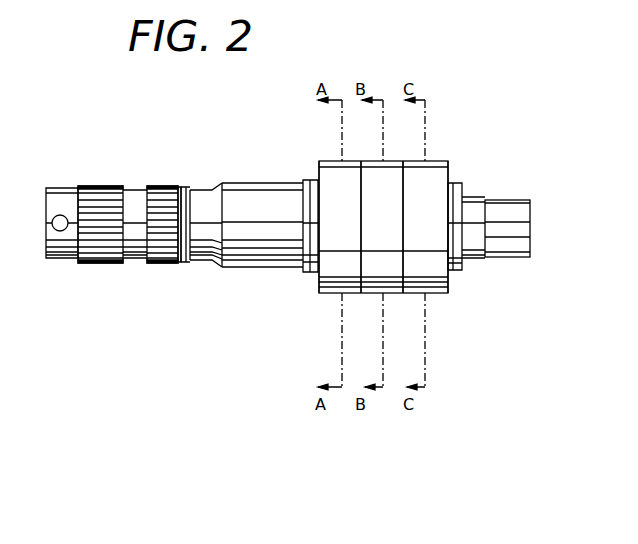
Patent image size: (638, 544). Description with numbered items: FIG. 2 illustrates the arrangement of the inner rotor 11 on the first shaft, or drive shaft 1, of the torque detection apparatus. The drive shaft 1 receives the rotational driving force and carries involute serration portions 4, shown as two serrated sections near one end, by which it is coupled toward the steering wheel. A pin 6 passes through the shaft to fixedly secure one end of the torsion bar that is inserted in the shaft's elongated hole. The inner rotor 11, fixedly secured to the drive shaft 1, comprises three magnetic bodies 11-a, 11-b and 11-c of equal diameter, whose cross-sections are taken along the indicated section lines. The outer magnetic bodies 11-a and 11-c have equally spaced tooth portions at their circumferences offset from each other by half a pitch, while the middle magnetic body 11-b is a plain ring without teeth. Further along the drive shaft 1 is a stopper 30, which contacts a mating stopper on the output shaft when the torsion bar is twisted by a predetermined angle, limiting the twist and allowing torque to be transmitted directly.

The first shaft (drive shaft) 1 is at (68, 183).
The involute serration portions 4 is at (110, 265).
The pins 6 is at (60, 231).
The inner rotor 11 is at (393, 170).
The magnetic body 11-a is at (333, 160).
The magnetic body 11-b is at (393, 161).
The magnetic body 11-c is at (447, 164).
The stopper 30 is at (474, 196).